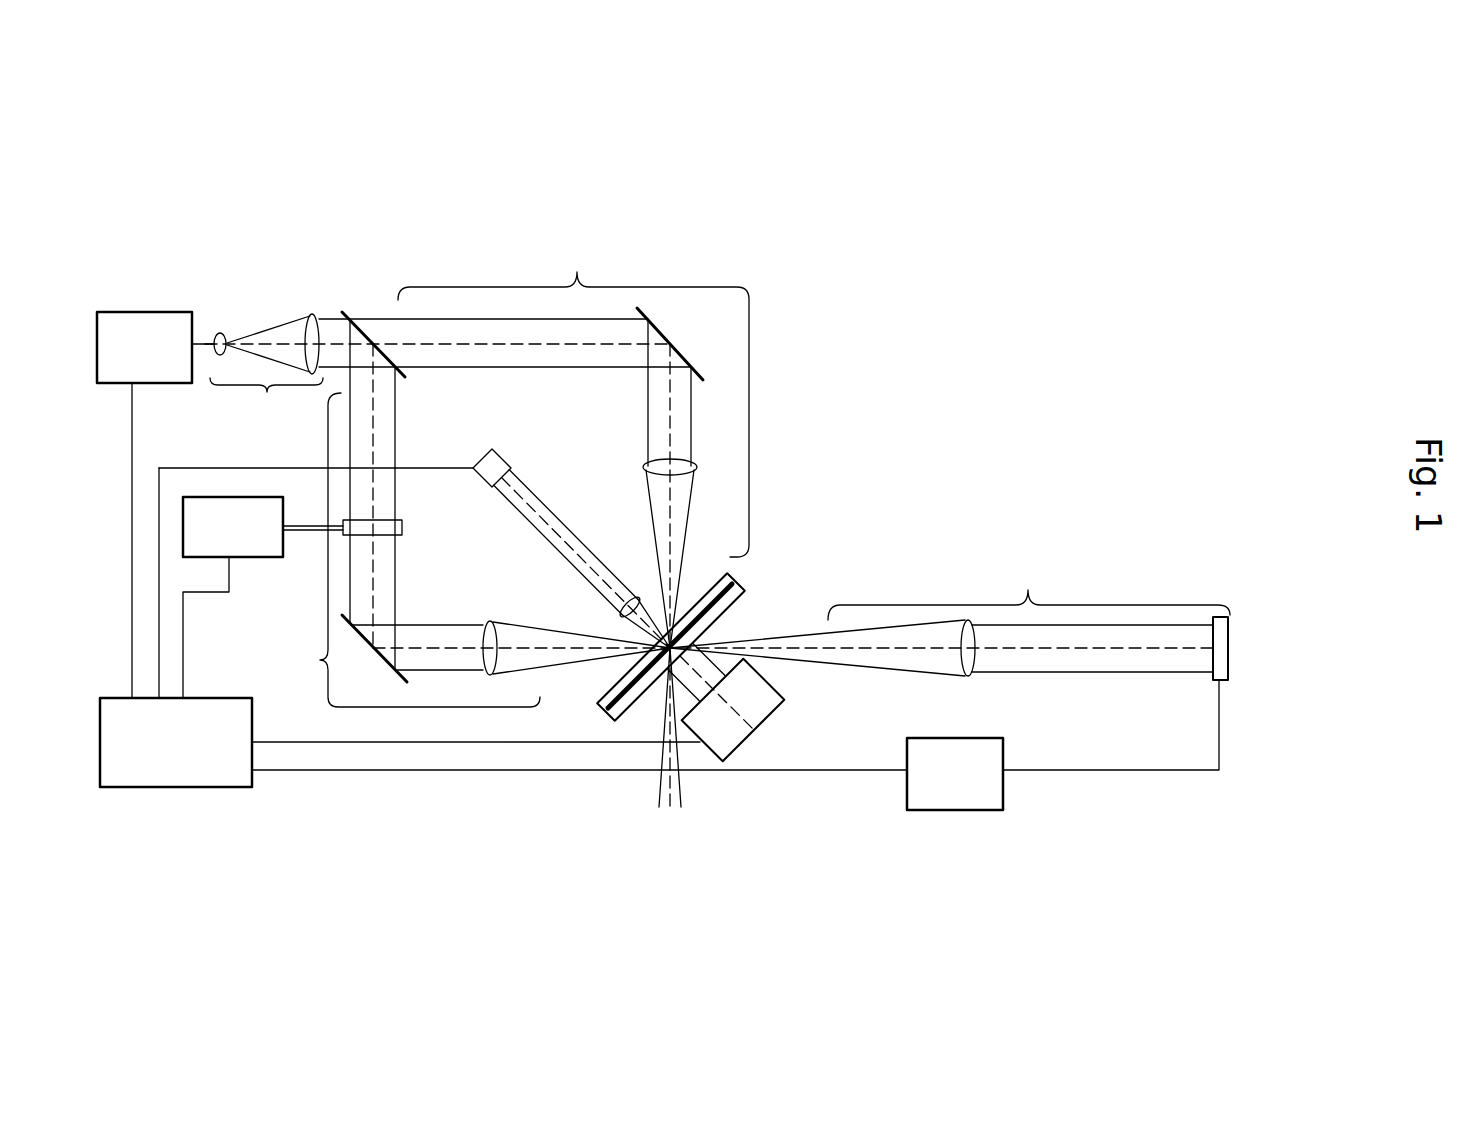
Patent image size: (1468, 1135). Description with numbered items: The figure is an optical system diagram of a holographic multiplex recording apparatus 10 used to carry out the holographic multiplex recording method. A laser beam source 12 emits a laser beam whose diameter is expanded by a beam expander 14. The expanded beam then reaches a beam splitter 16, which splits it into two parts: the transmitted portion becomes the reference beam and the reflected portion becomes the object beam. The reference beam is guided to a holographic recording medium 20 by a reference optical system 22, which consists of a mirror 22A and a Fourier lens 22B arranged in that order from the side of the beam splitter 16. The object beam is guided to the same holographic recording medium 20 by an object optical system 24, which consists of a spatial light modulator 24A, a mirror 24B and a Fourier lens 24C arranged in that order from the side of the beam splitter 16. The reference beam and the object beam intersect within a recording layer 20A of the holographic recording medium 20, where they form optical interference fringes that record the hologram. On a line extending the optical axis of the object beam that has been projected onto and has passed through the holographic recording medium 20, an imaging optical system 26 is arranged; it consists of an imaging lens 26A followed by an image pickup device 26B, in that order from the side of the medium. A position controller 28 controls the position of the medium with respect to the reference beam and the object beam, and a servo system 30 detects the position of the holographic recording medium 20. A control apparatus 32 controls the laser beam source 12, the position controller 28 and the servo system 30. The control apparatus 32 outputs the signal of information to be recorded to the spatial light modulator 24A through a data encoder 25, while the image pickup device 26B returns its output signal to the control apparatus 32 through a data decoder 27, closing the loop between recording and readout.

The holographic multiplex recording apparatus 10 is at (227, 243).
The laser beam source 12 is at (164, 292).
The beam expander 14 is at (257, 369).
The beam splitter 16 is at (346, 310).
The holographic recording medium 20 is at (722, 597).
The recording layer 20A is at (741, 588).
The reference optical system 22 is at (573, 522).
The mirror 22A is at (660, 328).
The Fourier lens 22B is at (644, 467).
The object optical system 24 is at (748, 550).
The spatial light modulator 24A is at (402, 527).
The mirror 24B is at (363, 640).
The Fourier lens 24C is at (490, 620).
The data encoder 25 is at (293, 486).
The imaging optical system 26 is at (950, 643).
The imaging lens 26A is at (970, 678).
The image pickup device 26B is at (1210, 680).
The data decoder 27 is at (1003, 795).
The position controller 28 is at (784, 702).
The servo system 30 is at (502, 450).
The control apparatus 32 is at (252, 711).